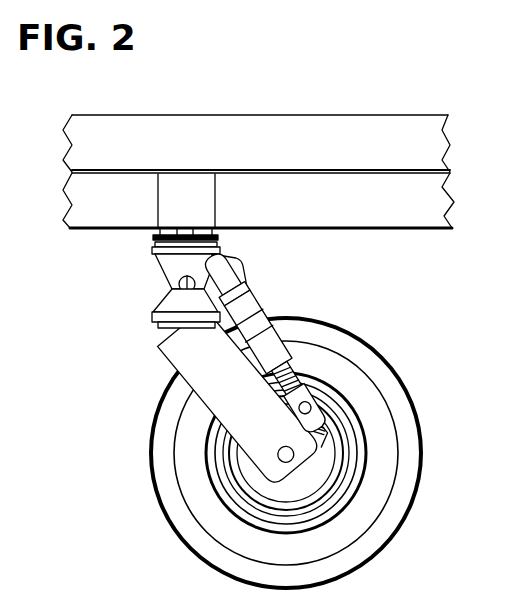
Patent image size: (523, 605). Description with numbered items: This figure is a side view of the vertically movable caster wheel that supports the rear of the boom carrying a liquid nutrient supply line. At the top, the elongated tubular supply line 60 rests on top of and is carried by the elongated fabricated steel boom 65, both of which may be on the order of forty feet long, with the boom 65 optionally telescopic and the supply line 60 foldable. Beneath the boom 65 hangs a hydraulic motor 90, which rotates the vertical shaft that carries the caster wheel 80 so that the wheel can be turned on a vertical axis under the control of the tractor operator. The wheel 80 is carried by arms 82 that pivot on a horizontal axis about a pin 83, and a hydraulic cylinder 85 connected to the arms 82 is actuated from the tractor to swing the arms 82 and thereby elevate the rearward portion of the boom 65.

The tubular supply line 60 is at (330, 115).
The boom 65 is at (363, 229).
The hydraulic motor 90 is at (200, 205).
The pin 83 is at (170, 278).
The hydraulic cylinder 85 is at (250, 308).
The arms 82 is at (212, 373).
The caster wheel 80 is at (416, 503).